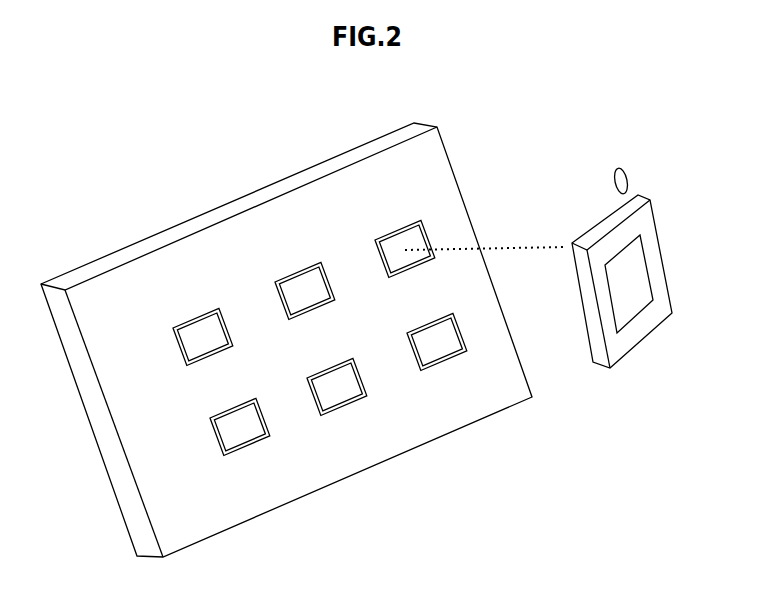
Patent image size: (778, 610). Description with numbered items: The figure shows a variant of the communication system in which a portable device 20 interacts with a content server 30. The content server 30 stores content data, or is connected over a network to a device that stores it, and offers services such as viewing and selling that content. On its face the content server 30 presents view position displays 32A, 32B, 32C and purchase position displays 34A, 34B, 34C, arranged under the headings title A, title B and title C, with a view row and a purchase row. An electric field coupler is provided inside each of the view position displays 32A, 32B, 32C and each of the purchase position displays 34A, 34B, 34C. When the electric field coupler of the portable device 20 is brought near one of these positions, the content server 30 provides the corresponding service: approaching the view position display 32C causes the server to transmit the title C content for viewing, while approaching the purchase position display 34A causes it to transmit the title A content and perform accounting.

The content server 30 is at (374, 140).
The portable device 20 is at (655, 210).
The view position display 32A is at (212, 356).
The view position display 32B is at (313, 310).
The view position display 32C is at (412, 268).
The purchase position display 34A is at (246, 447).
The purchase position display 34B is at (343, 406).
The purchase position display 34C is at (447, 362).